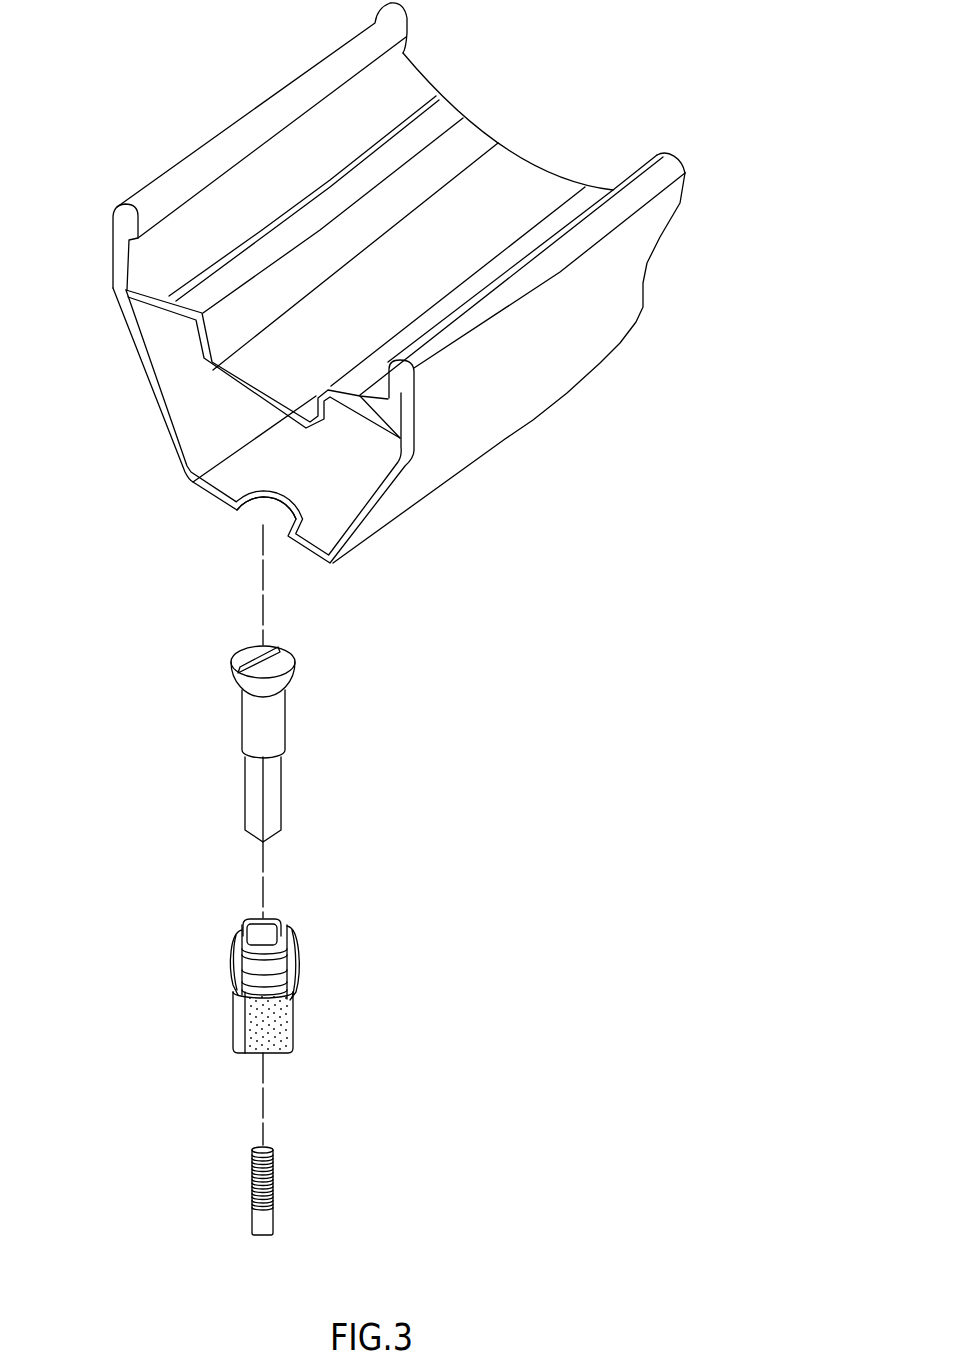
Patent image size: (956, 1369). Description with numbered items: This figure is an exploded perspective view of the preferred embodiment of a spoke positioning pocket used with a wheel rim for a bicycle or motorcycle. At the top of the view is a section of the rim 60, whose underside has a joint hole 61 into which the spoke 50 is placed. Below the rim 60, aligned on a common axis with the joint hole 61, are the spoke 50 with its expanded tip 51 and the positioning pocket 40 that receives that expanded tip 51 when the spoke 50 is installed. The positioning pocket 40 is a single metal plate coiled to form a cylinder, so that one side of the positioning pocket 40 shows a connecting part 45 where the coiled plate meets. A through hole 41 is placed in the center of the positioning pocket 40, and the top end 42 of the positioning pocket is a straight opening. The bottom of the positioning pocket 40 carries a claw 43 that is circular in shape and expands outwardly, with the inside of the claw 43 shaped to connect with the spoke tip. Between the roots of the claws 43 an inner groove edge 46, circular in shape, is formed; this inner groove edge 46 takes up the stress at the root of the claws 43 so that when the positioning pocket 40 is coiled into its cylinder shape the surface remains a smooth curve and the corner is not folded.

The positioning pocket 40 is at (287, 954).
The through hole 41 is at (265, 940).
The top end 42 is at (287, 1029).
The claw 43 is at (233, 960).
The connecting part 45 is at (233, 1012).
The inner groove edge 46 is at (290, 998).
The spoke 50 is at (270, 1218).
The expanded tip 51 is at (283, 678).
The rim 60 is at (478, 433).
The joint hole 61 is at (272, 516).